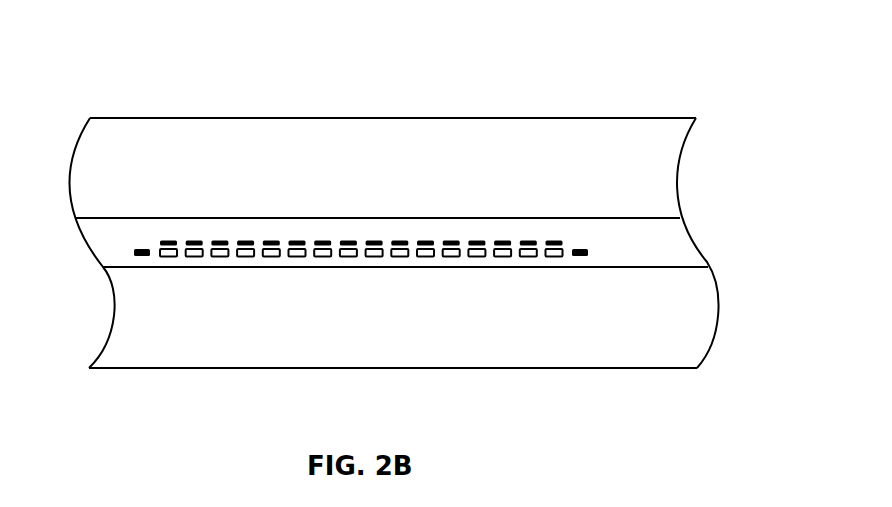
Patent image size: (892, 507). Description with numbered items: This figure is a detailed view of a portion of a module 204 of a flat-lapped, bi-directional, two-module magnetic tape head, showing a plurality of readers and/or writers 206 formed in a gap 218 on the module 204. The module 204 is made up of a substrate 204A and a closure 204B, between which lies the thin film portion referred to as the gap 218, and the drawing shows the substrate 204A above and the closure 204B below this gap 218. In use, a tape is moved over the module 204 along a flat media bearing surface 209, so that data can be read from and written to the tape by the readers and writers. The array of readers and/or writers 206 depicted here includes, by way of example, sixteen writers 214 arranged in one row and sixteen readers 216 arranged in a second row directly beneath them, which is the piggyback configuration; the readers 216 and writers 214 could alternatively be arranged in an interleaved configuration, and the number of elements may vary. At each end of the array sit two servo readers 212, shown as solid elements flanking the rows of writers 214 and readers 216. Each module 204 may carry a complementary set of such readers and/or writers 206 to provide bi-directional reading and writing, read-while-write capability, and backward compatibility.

The module 204 is at (395, 222).
The substrate 204A is at (194, 118).
The closure 204B is at (244, 368).
The readers and/or writers 206 is at (360, 241).
The media bearing surface 209 is at (320, 185).
The servo readers 212 is at (134, 252).
The writers 214 is at (477, 240).
The readers 216 is at (478, 257).
The gap 218 is at (698, 242).